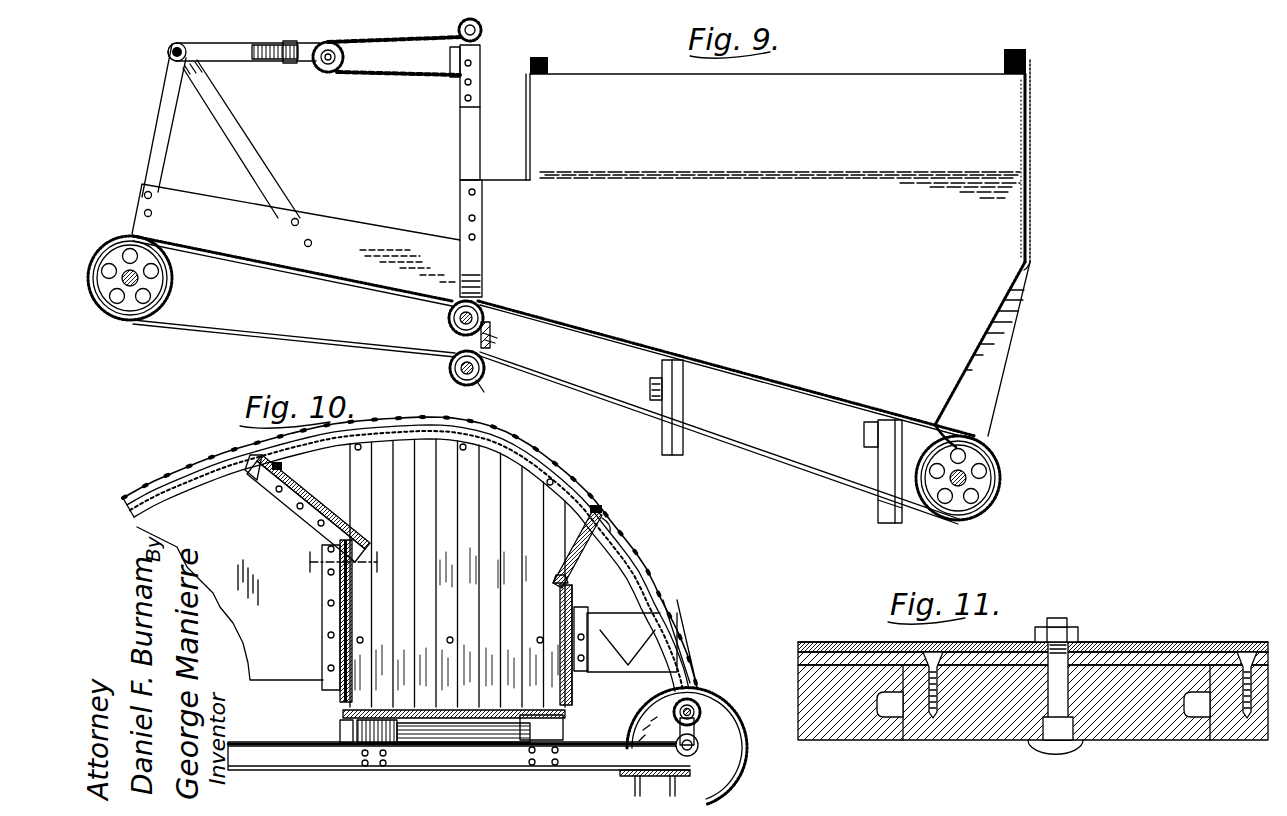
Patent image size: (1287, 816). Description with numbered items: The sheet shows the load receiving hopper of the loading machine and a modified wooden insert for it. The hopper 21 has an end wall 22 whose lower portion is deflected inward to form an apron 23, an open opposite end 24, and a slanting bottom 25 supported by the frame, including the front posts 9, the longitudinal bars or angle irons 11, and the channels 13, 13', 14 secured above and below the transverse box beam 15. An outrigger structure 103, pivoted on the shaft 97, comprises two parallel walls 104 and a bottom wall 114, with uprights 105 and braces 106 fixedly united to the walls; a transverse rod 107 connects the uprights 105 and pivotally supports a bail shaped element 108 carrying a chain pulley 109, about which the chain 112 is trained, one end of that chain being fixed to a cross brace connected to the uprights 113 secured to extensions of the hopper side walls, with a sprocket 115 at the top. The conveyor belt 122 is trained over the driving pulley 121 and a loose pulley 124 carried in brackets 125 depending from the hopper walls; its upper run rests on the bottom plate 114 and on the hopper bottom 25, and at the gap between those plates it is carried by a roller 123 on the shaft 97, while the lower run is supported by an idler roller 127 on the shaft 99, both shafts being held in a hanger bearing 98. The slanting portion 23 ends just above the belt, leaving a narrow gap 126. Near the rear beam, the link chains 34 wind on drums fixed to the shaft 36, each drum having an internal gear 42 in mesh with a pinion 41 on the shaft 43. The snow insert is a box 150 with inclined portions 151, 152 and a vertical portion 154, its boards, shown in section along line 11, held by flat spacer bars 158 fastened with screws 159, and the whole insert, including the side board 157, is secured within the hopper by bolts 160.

In FIG. 9, the front posts 9 is at (878, 502).
In FIG. 10, the longitudinal bars or angle irons 11 is at (339, 563).
In FIG. 10, the longitudinal channel 13 is at (459, 744).
In FIG. 9, the support post 13' is at (868, 471).
In FIG. 9, the longitudinal channel 14 is at (650, 382).
In FIG. 9, the transverse box beam 15 is at (1013, 263).
In FIG. 9, the hopper 21 is at (1003, 123).
In FIG. 9, the end wall 22 is at (1030, 202).
In FIG. 9, the apron 23 is at (983, 345).
In FIG. 9, the open end 24 is at (467, 205).
In FIG. 9, the slanting bottom 25 is at (752, 382).
In FIG. 10, the link chains 34 is at (693, 660).
In FIG. 10, the shaft 36 is at (700, 750).
In FIG. 10, the pinion 41 is at (698, 745).
In FIG. 10, the internal gear 42 is at (677, 787).
In FIG. 10, the shaft 43 is at (691, 705).
In FIG. 9, the shaft 97 is at (449, 318).
In FIG. 9, the hanger bearing 98 is at (497, 338).
In FIG. 9, the shaft 99 is at (449, 368).
In FIG. 9, the outrigger structure 103 is at (168, 181).
In FIG. 9, the parallel walls 104 is at (360, 222).
In FIG. 9, the uprights 105 is at (156, 115).
In FIG. 9, the braces 106 is at (228, 137).
In FIG. 9, the transverse rod 107 is at (168, 54).
In FIG. 9, the bail shaped element 108 is at (230, 62).
In FIG. 9, the chain pulley 109 is at (325, 72).
In FIG. 9, the chain 112 is at (395, 56).
In FIG. 9, the uprights 113 is at (463, 147).
In FIG. 9, the bottom wall 114 is at (345, 280).
In FIG. 9, the sprocket 115 is at (460, 30).
In FIG. 9, the pulley 121 is at (170, 295).
In FIG. 9, the conveyor belt 122 is at (168, 238).
In FIG. 10, the conveyor belt 122 is at (387, 712).
In FIG. 9, the roller 123 is at (447, 326).
In FIG. 9, the loose pulley 124 is at (970, 478).
In FIG. 9, the brackets 125 is at (988, 436).
In FIG. 9, the gap 126 is at (937, 423).
In FIG. 9, the idler roller 127 is at (479, 383).
In FIG. 10, the box 150 is at (483, 543).
In FIG. 10, the inclined portion 151 is at (300, 476).
In FIG. 10, the inclined portion 152 is at (595, 510).
In FIG. 10, the vertical portion 154 is at (553, 612).
In FIG. 10, the side panel 157 is at (323, 612).
In FIG. 10, the flat spacer bars 158 is at (340, 527).
In FIG. 11, the flat spacer bars 158 is at (800, 658).
In FIG. 11, the screws 159 is at (920, 740).
In FIG. 10, the bolts 160 is at (272, 478).
In FIG. 11, the bolts 160 is at (1067, 622).